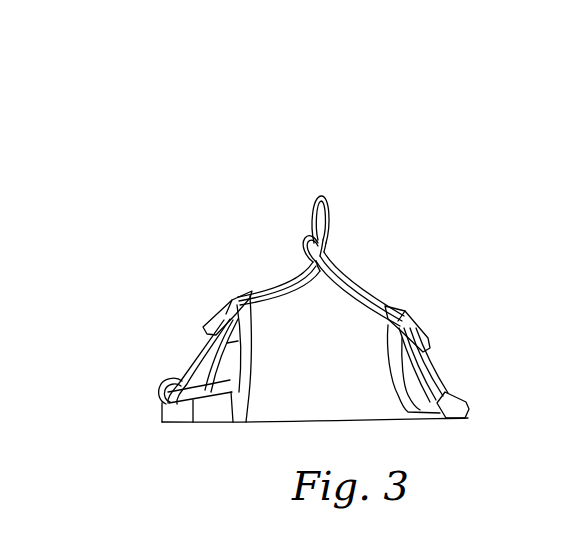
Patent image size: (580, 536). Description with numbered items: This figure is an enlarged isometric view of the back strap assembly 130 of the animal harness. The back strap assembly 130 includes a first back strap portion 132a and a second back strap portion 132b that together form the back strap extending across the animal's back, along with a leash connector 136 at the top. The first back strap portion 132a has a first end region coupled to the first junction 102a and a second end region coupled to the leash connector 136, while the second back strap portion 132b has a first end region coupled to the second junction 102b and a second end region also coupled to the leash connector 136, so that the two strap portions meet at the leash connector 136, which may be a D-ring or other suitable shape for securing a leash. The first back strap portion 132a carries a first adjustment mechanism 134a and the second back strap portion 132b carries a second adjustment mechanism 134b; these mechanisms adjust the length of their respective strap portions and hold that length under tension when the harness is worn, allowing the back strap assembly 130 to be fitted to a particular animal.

The back strap assembly 130 is at (90, 86).
The leash connector 136 is at (322, 194).
The first back strap portion 132a is at (282, 288).
The second back strap portion 132b is at (353, 297).
The first adjustment mechanism 134a is at (210, 313).
The second adjustment mechanism 134b is at (423, 321).
The first junction 102a is at (162, 393).
The second junction 102b is at (458, 398).